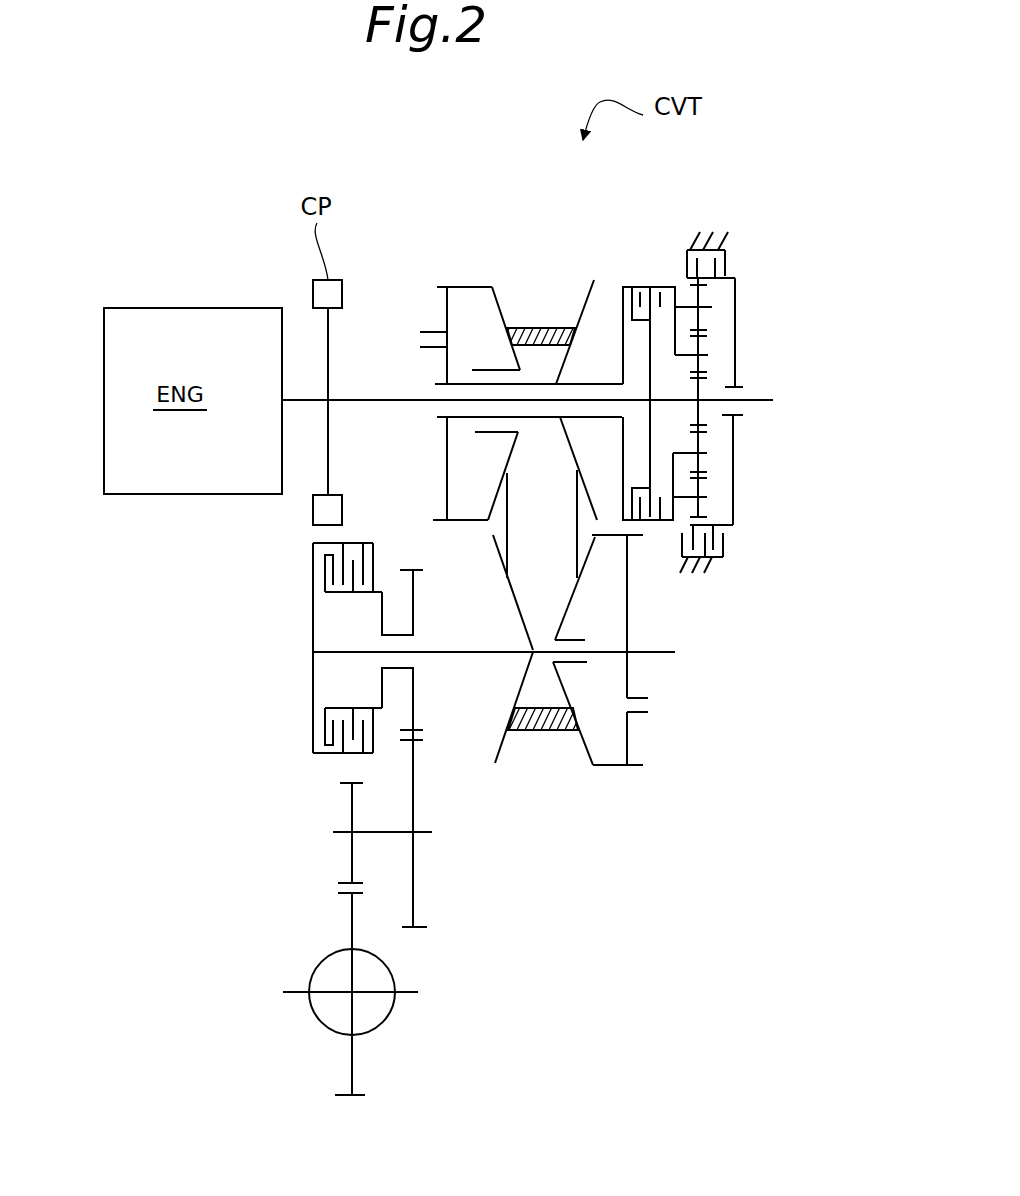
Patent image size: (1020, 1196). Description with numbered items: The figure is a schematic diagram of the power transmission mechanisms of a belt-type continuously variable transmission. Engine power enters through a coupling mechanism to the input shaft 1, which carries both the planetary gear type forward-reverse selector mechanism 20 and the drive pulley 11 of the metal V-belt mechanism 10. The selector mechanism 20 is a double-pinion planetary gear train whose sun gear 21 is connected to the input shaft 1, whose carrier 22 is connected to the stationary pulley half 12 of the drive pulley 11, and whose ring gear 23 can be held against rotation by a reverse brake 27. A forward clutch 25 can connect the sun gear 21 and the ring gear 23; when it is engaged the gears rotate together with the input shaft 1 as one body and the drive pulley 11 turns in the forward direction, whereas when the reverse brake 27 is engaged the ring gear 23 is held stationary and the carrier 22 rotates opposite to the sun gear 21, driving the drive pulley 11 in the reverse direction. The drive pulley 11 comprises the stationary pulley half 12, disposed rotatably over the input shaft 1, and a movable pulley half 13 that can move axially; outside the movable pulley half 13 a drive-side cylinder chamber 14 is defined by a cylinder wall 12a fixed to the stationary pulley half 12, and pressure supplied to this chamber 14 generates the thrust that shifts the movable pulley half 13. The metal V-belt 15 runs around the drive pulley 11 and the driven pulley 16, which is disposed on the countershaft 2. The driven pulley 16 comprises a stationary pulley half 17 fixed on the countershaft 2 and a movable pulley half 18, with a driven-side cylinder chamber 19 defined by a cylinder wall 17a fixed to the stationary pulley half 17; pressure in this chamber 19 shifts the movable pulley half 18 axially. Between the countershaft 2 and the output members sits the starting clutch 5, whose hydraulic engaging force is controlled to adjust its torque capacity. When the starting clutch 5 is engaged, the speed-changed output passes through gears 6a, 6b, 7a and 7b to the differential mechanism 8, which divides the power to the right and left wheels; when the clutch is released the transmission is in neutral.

The input shaft 1 is at (385, 402).
The countershaft 2 is at (465, 653).
The starting clutch 5 is at (296, 734).
The gear 6a is at (415, 587).
The gear 6b is at (423, 927).
The gear 7a is at (350, 805).
The gear 7b is at (350, 918).
The differential mechanism 8 is at (385, 1018).
The metal V-belt mechanism 10 is at (519, 334).
The drive pulley 11 is at (468, 272).
The stationary pulley half 12 is at (619, 352).
The cylinder wall 12a is at (435, 360).
The movable pulley half 13 is at (493, 295).
The drive-side cylinder chamber 14 is at (492, 351).
The metal V-belt 15 is at (505, 528).
The driven pulley 16 is at (623, 689).
The stationary pulley half 17 is at (495, 755).
The cylinder wall 17a is at (627, 620).
The movable pulley half 18 is at (587, 755).
The driven-side cylinder chamber 19 is at (612, 620).
The planetary gear type forward-reverse selector mechanism 20 is at (763, 368).
The sun gear 21 is at (733, 377).
The carrier 22 is at (677, 320).
The ring gear 23 is at (737, 290).
The forward clutch 25 is at (645, 286).
The reverse brake 27 is at (727, 257).